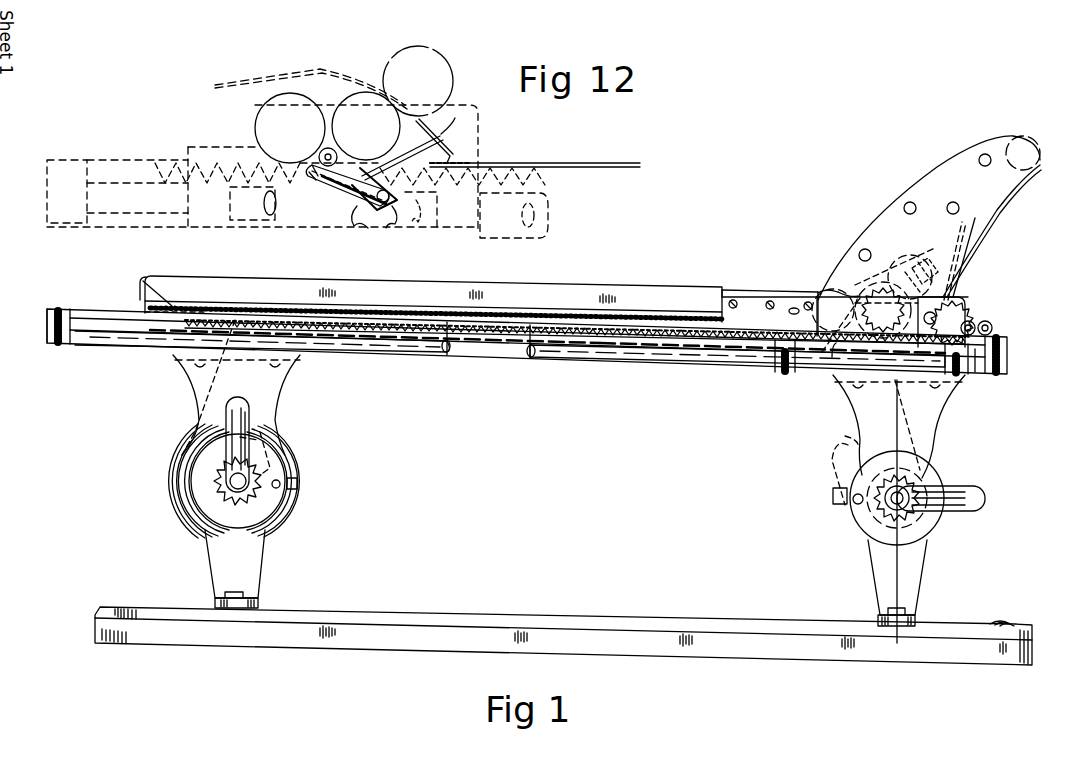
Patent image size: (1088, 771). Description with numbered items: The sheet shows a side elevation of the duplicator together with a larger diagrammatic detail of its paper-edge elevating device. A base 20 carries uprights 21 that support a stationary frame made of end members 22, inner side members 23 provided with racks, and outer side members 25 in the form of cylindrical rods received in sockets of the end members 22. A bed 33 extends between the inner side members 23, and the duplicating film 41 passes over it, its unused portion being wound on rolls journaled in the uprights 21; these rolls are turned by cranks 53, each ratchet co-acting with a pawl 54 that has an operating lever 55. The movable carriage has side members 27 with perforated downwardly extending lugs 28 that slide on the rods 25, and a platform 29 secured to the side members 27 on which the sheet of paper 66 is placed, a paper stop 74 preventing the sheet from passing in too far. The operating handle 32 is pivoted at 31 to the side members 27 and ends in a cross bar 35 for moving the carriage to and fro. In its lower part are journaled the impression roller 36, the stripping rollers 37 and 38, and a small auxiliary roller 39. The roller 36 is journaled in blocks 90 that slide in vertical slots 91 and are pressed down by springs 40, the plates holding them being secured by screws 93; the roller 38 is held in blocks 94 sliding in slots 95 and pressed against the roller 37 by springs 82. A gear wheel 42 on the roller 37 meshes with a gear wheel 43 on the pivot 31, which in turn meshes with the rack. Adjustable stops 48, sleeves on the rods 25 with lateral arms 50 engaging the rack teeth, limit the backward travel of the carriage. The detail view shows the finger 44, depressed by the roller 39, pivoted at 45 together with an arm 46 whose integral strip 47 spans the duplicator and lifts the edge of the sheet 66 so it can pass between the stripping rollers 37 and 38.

In FIG. 1, the base 20 is at (452, 634).
In FIG. 1, the uprights 21 is at (280, 394).
In FIG. 1, the end members 22 is at (52, 325).
In FIG. 1, the inner side members 23 is at (516, 352).
In FIG. 1, the outer side members 25 is at (405, 341).
In FIG. 1, the side members 27 is at (946, 297).
In FIG. 1, the downwardly extending lugs 28 is at (780, 365).
In FIG. 1, the platform 29 is at (558, 300).
In FIG. 1, the pivot 31 is at (937, 317).
In FIG. 1, the operating handle 32 is at (987, 188).
In FIG. 1, the bed 33 is at (470, 330).
In FIG. 1, the cross bar 35 is at (1040, 152).
In FIG. 12, the impression roller 36 is at (267, 126).
In FIG. 1, the impression roller 36 is at (822, 300).
In FIG. 12, the stripping roller 37 is at (353, 122).
In FIG. 1, the stripping roller 37 is at (862, 295).
In FIG. 12, the stripping roller 38 is at (400, 58).
In FIG. 1, the stripping roller 38 is at (952, 262).
In FIG. 12, the auxiliary roller 39 is at (322, 176).
In FIG. 1, the auxiliary roller 39 is at (836, 352).
In FIG. 1, the springs 40 is at (910, 262).
In FIG. 1, the duplicating film 41 is at (493, 322).
In FIG. 1, the gear wheel 42 is at (883, 297).
In FIG. 1, the gear wheel 43 is at (960, 290).
In FIG. 12, the finger 44 is at (353, 194).
In FIG. 1, the finger 44 is at (160, 294).
In FIG. 12, the pivot 45 is at (374, 202).
In FIG. 12, the arm 46 is at (402, 218).
In FIG. 12, the strip 47 is at (440, 152).
In FIG. 1, the adjustable stops 48 is at (1000, 372).
In FIG. 1, the arms 50 is at (992, 322).
In FIG. 1, the cranks 53 is at (222, 415).
In FIG. 1, the pawl 54 is at (290, 505).
In FIG. 1, the operating lever 55 is at (270, 465).
In FIG. 12, the sheet of paper 66 is at (598, 163).
In FIG. 1, the paper stop 74 is at (838, 297).
In FIG. 1, the springs 82 is at (953, 250).
In FIG. 1, the blocks 90 is at (815, 300).
In FIG. 1, the vertical slots 91 is at (822, 292).
In FIG. 1, the screws 93 is at (985, 153).
In FIG. 1, the block 94 is at (905, 270).
In FIG. 1, the slots 95 is at (925, 265).